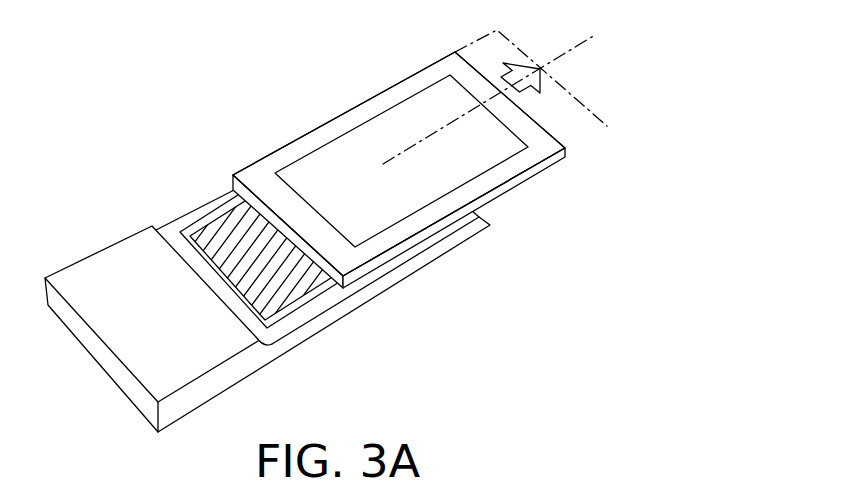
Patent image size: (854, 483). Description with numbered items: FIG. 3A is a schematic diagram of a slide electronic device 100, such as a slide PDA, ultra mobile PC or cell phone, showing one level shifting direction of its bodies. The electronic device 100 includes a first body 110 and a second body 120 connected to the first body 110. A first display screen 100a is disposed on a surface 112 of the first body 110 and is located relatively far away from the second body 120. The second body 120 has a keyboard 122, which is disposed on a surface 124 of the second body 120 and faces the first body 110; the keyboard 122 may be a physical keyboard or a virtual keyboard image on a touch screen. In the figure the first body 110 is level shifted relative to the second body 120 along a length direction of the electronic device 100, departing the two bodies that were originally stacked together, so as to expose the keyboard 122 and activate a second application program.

The electronic device 100 is at (350, 239).
The first display screen 100a is at (423, 107).
The first body 110 is at (455, 159).
The surface 112 is at (547, 147).
The second body 120 is at (463, 237).
The keyboard 122 is at (312, 287).
The surface 124 is at (168, 329).